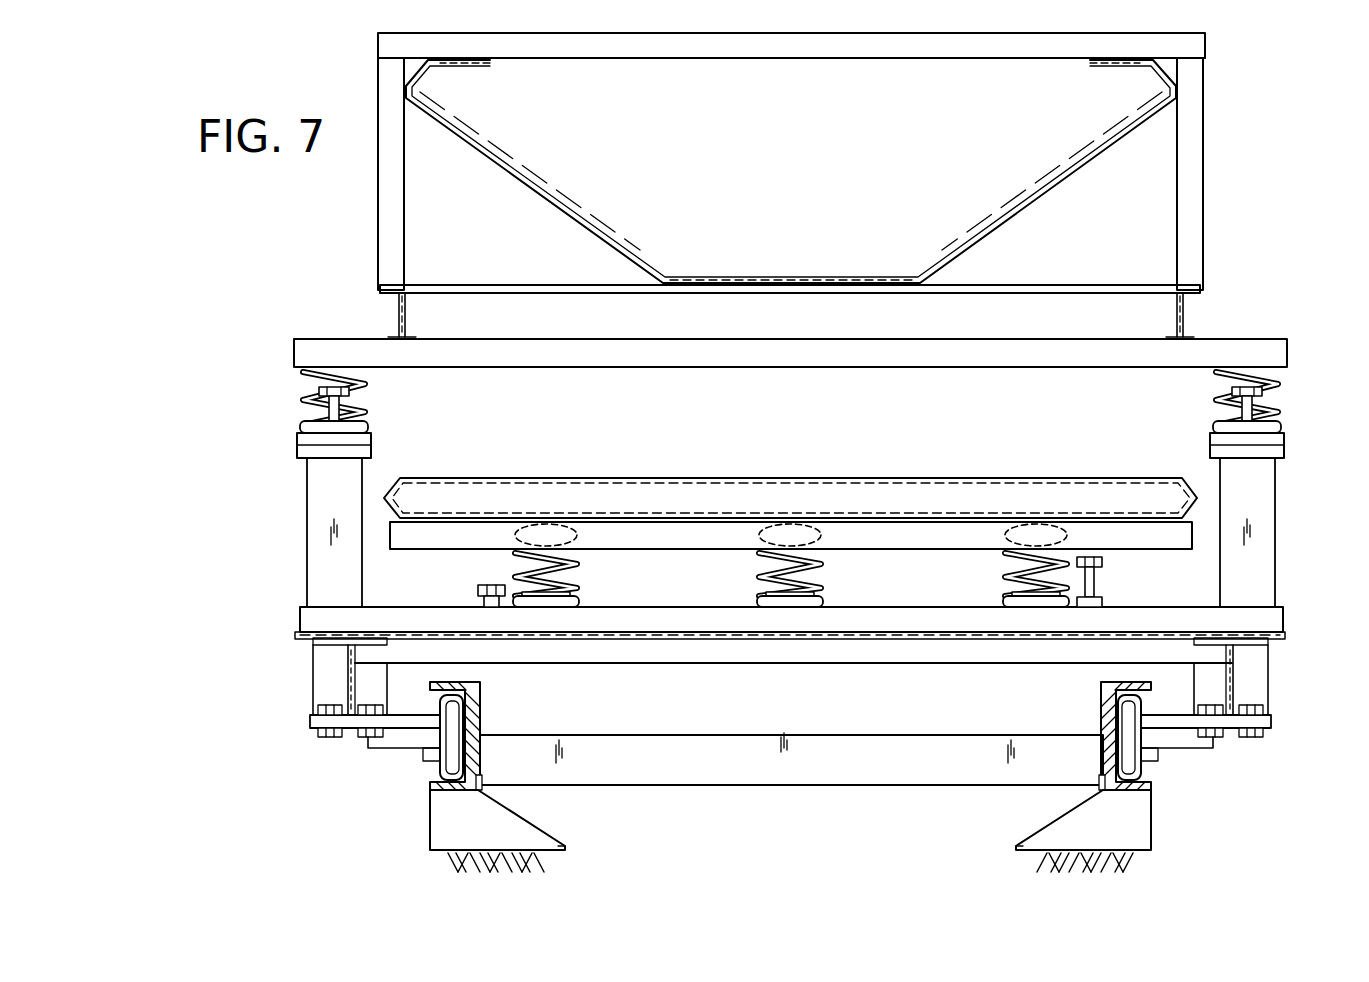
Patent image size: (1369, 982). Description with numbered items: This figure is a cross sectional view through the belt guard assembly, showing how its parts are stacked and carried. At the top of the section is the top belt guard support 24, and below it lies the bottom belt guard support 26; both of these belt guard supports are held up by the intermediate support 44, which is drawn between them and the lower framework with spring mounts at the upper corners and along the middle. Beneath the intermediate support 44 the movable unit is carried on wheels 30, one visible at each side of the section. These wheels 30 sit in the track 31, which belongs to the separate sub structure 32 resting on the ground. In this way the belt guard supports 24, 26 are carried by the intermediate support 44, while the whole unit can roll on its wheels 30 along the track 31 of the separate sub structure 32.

The top belt guard support 24 is at (545, 198).
The bottom belt guard support 26 is at (1010, 478).
The intermediate support 44 is at (366, 405).
The track 31 is at (466, 698).
The wheels 30 is at (440, 770).
The separate sub structure 32 is at (430, 827).